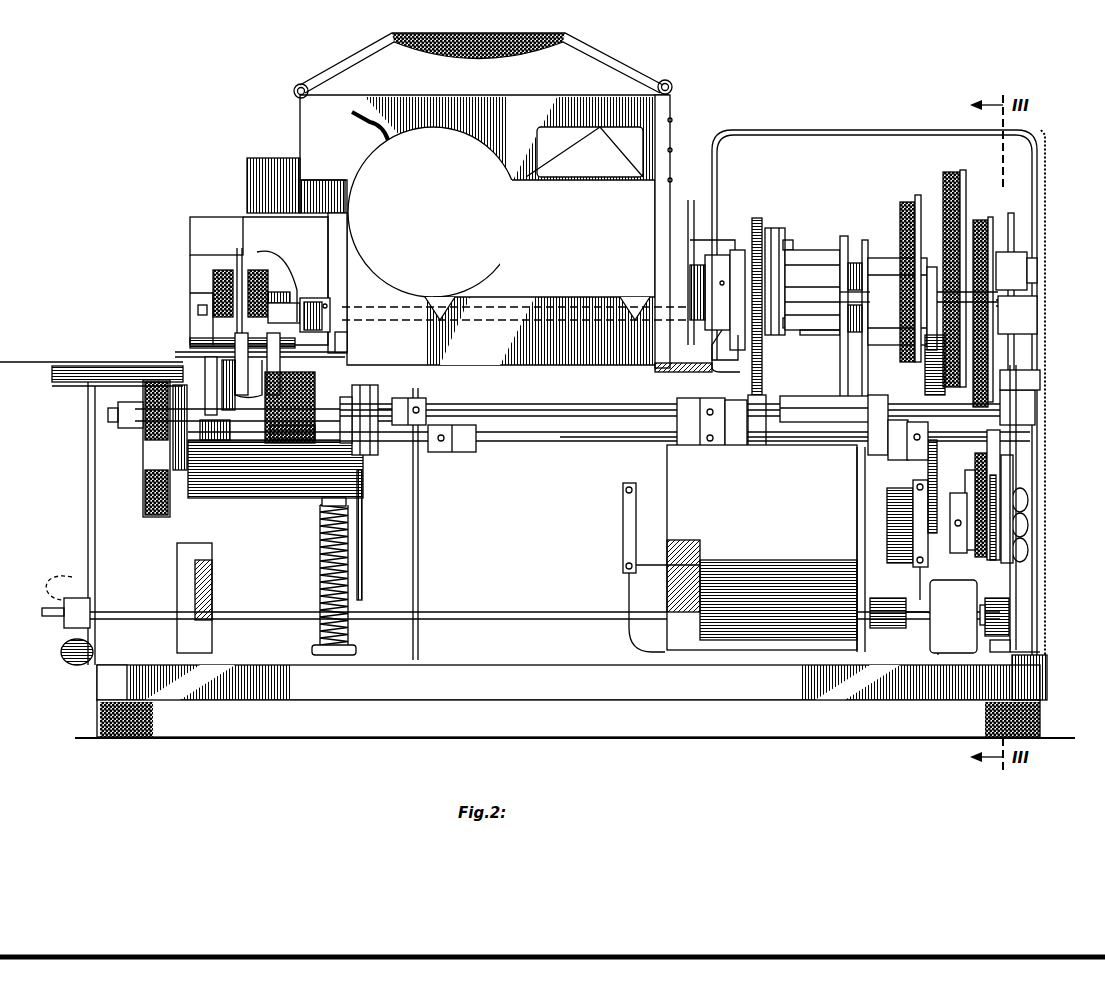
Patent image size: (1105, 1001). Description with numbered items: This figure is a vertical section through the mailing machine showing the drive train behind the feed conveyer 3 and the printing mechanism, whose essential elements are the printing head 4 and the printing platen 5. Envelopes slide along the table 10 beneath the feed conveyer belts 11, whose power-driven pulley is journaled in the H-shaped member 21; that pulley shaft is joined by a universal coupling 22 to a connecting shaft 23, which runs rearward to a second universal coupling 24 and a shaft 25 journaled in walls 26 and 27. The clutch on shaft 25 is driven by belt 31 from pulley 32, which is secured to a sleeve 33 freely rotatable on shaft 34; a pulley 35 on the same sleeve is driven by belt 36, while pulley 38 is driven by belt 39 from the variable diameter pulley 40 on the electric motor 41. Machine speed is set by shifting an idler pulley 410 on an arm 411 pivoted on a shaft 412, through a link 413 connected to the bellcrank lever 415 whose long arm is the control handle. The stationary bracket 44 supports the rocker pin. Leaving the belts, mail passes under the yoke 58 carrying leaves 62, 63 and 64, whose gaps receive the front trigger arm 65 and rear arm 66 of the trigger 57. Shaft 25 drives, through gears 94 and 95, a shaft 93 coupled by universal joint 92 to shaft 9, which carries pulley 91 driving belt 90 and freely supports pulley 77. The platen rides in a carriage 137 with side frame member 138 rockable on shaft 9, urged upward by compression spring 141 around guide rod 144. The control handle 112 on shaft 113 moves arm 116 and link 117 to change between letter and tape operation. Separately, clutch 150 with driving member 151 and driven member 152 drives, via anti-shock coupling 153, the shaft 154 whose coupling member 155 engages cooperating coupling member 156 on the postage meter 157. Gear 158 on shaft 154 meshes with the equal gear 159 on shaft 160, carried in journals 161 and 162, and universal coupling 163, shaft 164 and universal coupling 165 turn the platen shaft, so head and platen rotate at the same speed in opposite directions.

The feed conveyer 3 is at (192, 293).
The printing head 4 is at (200, 236).
The printing platen 5 is at (282, 455).
The shaft 9 is at (385, 440).
The table 10 is at (110, 365).
The feed conveyer belts 11 is at (225, 270).
The H-shaped member 21 is at (281, 293).
The universal coupling 22 is at (306, 297).
The connecting shaft 23 is at (373, 308).
The second universal coupling 24 is at (710, 345).
The shaft 25 is at (1034, 310).
The wall 26 is at (712, 238).
The wall 27 is at (1016, 226).
The belt 31 is at (918, 200).
The pulley 32 is at (905, 203).
The sleeve 33 is at (932, 266).
The shaft 34 is at (1030, 272).
The pulley 35 is at (965, 200).
The belt 36 is at (953, 174).
The pulley 38 is at (992, 226).
The belt 39 is at (981, 220).
The variable diameter pulley 40 is at (992, 566).
The electric motor 41 is at (799, 530).
The stationary bracket 44 is at (347, 340).
The trigger 57 is at (248, 395).
The yoke 58 is at (196, 325).
The leaf 62 is at (192, 350).
The leaf 63 is at (268, 345).
The leaf 64 is at (290, 330).
The front trigger arm 65 is at (238, 340).
The rear arm 66 is at (275, 380).
The pulley 77 is at (243, 500).
The driving belt 90 is at (158, 508).
The pulley 91 is at (143, 500).
The universal joint 92 is at (462, 453).
The shaft 93 is at (521, 443).
The gear 94 is at (928, 468).
The gear 95 is at (928, 356).
The control handle 112 is at (66, 647).
The shaft 113 is at (248, 612).
The arm 116 is at (882, 622).
The link 117 is at (856, 534).
The carriage 137 is at (305, 500).
The side frame member 138 is at (182, 472).
The compression spring 141 is at (322, 572).
The guide rod 144 is at (320, 548).
The clutch 150 is at (843, 240).
The driving member 151 is at (867, 262).
The driven member 152 is at (818, 262).
The anti-shock coupling 153 is at (782, 233).
The shaft 154 is at (735, 250).
The coupling member 155 is at (710, 263).
The cooperating coupling member 156 is at (704, 281).
The postage meter 157 is at (665, 82).
The gear 158 is at (757, 218).
The gear 159 is at (766, 396).
The shaft 160 is at (825, 397).
The journal 161 is at (734, 458).
The journal 162 is at (1036, 405).
The universal coupling 163 is at (704, 400).
The shaft 164 is at (507, 412).
The universal coupling 165 is at (414, 400).
The idler pulley 410 is at (972, 480).
The arm 411 is at (1012, 584).
The shaft 412 is at (1004, 612).
The link 413 is at (1002, 562).
The bellcrank lever 415 is at (1000, 492).